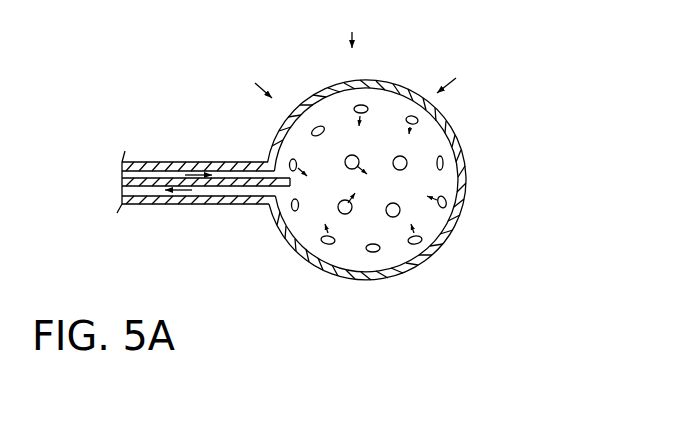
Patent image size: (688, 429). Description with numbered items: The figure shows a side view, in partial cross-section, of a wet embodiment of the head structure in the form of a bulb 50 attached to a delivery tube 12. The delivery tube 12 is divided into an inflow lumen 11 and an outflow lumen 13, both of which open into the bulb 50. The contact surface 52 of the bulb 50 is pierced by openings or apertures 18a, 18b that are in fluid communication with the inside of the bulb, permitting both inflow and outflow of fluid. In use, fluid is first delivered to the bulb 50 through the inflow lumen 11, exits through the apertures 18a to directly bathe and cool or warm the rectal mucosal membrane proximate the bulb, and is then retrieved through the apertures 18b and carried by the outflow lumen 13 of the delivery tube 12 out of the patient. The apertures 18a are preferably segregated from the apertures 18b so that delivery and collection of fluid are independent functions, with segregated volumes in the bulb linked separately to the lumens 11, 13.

The inflow lumen 11 is at (223, 177).
The delivery tube 12 is at (143, 161).
The outflow lumen 13 is at (155, 190).
The apertures 18a is at (318, 130).
The apertures 18b is at (416, 241).
The bulb 50 is at (388, 156).
The contact surface 52 is at (448, 119).